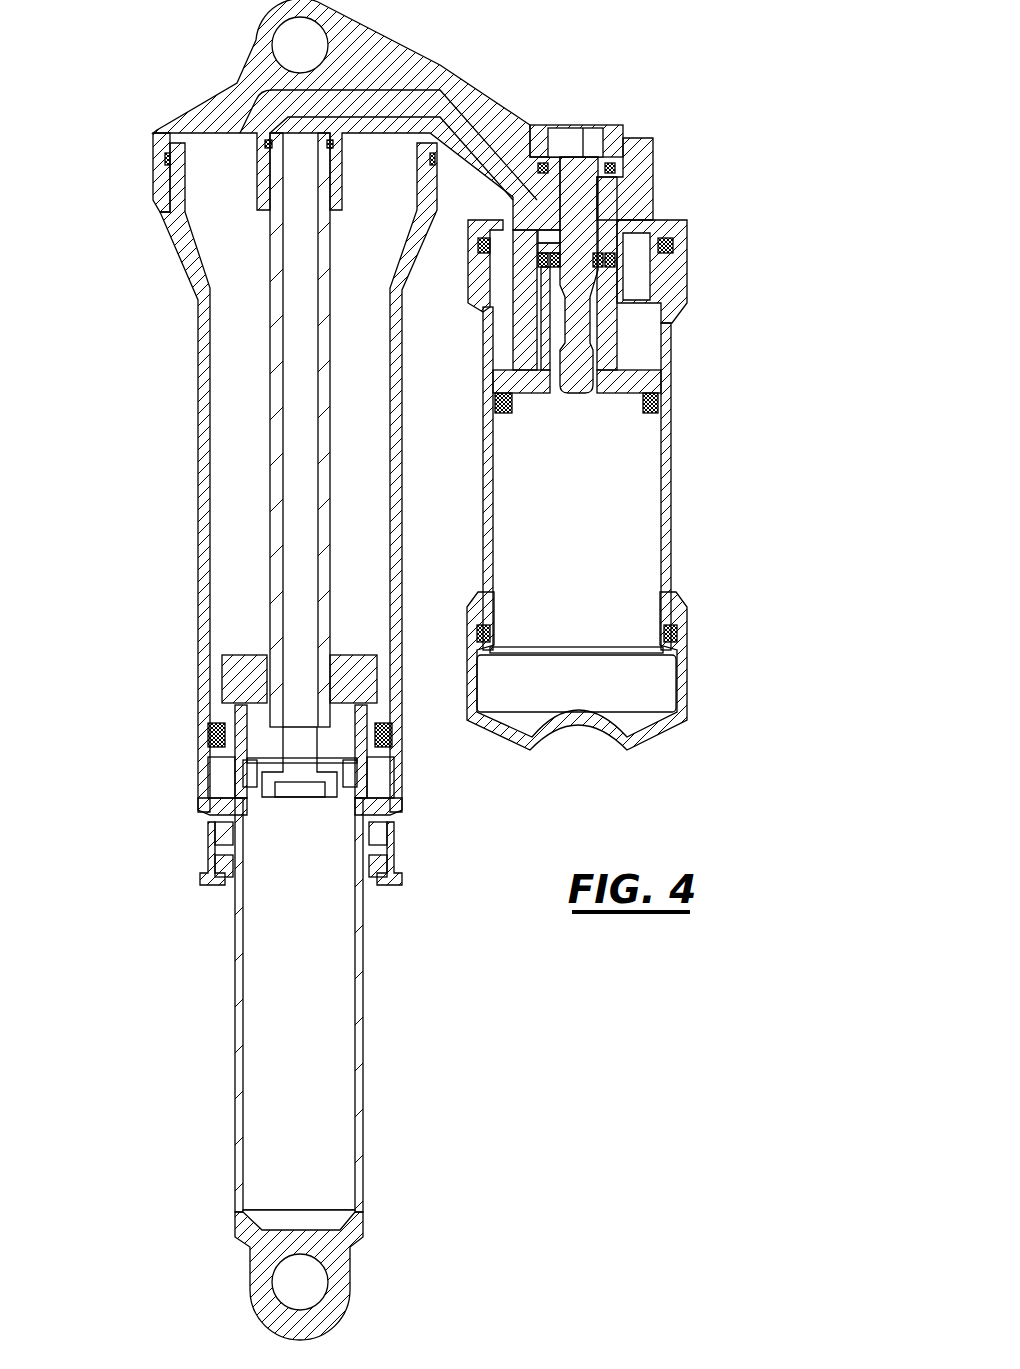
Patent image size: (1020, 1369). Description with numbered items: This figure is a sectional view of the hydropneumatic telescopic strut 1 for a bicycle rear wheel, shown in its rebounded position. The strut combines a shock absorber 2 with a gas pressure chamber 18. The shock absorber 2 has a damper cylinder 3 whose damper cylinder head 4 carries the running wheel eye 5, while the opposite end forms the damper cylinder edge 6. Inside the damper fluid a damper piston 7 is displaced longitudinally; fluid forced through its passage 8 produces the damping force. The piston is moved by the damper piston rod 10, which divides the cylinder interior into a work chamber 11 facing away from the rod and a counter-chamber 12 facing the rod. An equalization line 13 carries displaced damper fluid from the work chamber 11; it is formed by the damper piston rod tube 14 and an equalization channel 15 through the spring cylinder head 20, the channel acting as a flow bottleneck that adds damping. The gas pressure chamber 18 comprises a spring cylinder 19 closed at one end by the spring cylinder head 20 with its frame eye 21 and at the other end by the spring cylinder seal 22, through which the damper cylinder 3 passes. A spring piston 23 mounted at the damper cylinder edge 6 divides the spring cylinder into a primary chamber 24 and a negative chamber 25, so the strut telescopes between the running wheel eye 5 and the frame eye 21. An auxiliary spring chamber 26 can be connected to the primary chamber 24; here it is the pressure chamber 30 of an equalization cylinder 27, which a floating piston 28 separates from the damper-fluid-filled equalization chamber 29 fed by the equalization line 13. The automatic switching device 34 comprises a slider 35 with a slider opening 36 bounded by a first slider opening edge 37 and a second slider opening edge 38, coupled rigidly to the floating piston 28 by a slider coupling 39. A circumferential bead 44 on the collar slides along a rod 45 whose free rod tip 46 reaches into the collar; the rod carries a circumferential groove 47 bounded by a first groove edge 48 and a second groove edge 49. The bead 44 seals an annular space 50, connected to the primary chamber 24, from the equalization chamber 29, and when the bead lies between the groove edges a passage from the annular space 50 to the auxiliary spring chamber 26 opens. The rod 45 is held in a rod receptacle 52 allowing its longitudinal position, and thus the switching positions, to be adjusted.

The hydropneumatic telescopic strut 1 is at (432, 670).
The shock absorber 2 is at (301, 1069).
The damper cylinder 3 is at (365, 1078).
The damper cylinder head 4 is at (365, 1230).
The running wheel eye 5 is at (330, 1332).
The damper cylinder edge 6 is at (256, 688).
The damper piston 7 is at (200, 796).
The passage 8 is at (343, 793).
The damper piston rod 10 is at (268, 500).
The work chamber 11 is at (299, 1184).
The counter-chamber 12 is at (340, 723).
The equalization line 13 is at (462, 93).
The damper piston rod tube 14 is at (282, 367).
The equalization channel 15 is at (477, 182).
The gas pressure chamber 18 is at (178, 364).
The spring cylinder 19 is at (198, 486).
The spring cylinder head 20 is at (165, 115).
The frame eye 21 is at (340, 6).
The spring cylinder seal 22 is at (390, 840).
The spring piston 23 is at (240, 652).
The primary chamber 24 is at (353, 603).
The negative chamber 25 is at (220, 773).
The auxiliary spring chamber 26 is at (576, 659).
The equalization cylinder 27 is at (672, 542).
The floating piston 28 is at (652, 412).
The equalization chamber 29 is at (626, 366).
The pressure chamber 30 is at (615, 635).
The automatic switching device 34 is at (596, 391).
The slider 35 is at (476, 300).
The slider opening 36 is at (693, 273).
The first slider opening edge 37 is at (626, 366).
The second slider opening edge 38 is at (709, 260).
The slider coupling 39 is at (548, 338).
The circumferential bead 44 is at (655, 222).
The rod 45 is at (617, 130).
The free rod tip 46 is at (578, 385).
The circumferential groove 47 is at (622, 330).
The first groove edge 48 is at (577, 381).
The second groove edge 49 is at (665, 245).
The annular space 50 is at (547, 232).
The rod receptacle 52 is at (605, 192).